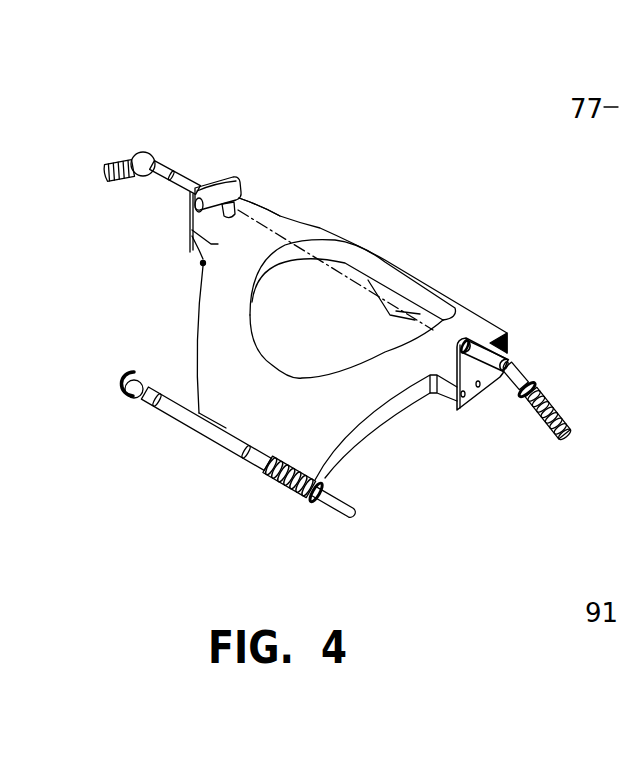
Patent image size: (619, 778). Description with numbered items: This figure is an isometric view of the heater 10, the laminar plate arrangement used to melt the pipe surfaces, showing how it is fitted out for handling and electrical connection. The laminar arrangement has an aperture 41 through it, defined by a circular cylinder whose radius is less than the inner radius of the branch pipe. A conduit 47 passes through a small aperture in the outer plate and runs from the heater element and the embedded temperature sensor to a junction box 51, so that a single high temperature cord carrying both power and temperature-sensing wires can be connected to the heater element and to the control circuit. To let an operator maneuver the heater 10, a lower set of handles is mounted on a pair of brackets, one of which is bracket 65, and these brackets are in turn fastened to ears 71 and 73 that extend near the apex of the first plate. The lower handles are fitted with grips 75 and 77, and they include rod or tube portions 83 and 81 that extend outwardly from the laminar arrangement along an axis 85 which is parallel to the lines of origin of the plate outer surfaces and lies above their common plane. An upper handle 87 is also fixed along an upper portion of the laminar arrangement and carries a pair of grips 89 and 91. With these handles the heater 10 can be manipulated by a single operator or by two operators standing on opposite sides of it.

The heater 10 is at (345, 119).
The aperture 41 is at (340, 307).
The conduit 47 is at (247, 202).
The junction box 51 is at (231, 179).
The bracket 65 is at (470, 390).
The ear 71 is at (485, 333).
The ear 73 is at (191, 237).
The grip 75 is at (566, 443).
The grip 77 is at (118, 160).
The rod or tube portion 81 is at (527, 366).
The rod or tube portion 83 is at (178, 172).
The axis 85 is at (312, 245).
The upper handle 87 is at (182, 424).
The grip 89 is at (313, 503).
The grip 91 is at (117, 390).